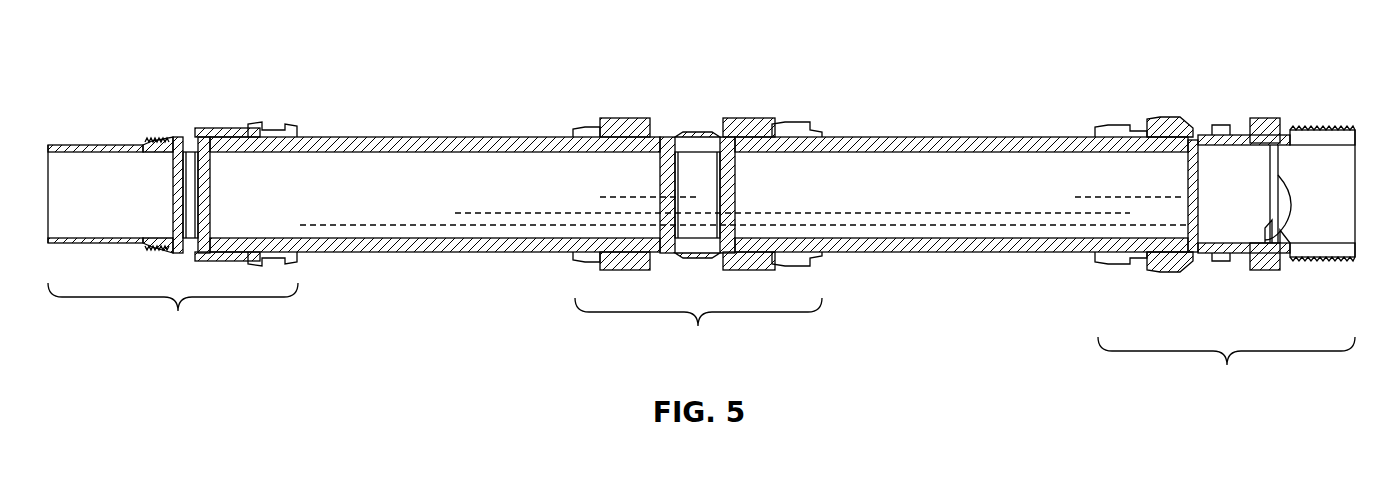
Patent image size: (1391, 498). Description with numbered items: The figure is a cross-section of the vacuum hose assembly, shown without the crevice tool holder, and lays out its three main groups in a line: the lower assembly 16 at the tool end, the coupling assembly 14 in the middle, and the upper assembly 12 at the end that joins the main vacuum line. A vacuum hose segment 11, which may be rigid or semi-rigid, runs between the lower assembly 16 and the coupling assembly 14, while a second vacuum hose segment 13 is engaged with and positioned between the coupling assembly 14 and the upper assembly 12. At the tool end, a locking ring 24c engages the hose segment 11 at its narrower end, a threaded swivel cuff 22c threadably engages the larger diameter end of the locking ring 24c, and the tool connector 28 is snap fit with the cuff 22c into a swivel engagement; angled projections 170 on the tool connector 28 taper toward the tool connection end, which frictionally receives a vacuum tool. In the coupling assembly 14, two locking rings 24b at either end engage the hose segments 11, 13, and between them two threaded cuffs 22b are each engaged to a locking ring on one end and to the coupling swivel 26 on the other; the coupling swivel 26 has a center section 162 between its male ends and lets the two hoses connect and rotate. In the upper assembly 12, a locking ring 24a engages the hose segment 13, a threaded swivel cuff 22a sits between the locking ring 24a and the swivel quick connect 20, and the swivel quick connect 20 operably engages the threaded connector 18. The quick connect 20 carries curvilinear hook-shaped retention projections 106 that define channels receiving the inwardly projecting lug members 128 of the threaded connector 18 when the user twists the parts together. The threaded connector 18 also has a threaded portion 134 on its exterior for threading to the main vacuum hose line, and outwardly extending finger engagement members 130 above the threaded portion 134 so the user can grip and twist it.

The vacuum hose segment 11 is at (430, 137).
The upper assembly 12 is at (1226, 269).
The vacuum hose segment 13 is at (920, 137).
The coupling assembly 14 is at (698, 255).
The lower assembly 16 is at (173, 319).
The threaded connector 18 is at (1268, 117).
The swivel quick connect 20 is at (1220, 124).
The threaded swivel cuff 22a is at (1165, 119).
The threaded cuff 22b is at (636, 126).
The threaded swivel cuff 22c is at (207, 130).
The locking ring 24a is at (1108, 127).
The locking ring 24b is at (578, 133).
The locking ring 24c is at (262, 122).
The coupling swivel 26 is at (693, 133).
The tool connector 28 is at (103, 140).
The curvilinear hook-shaped retention projection 106 is at (1285, 222).
The inwardly projecting lug member 128 is at (1276, 178).
The outwardly extending finger engagement member 130 is at (1272, 270).
The threaded portion 134 is at (1330, 128).
The center section 162 is at (700, 256).
The angled projection 170 is at (137, 136).